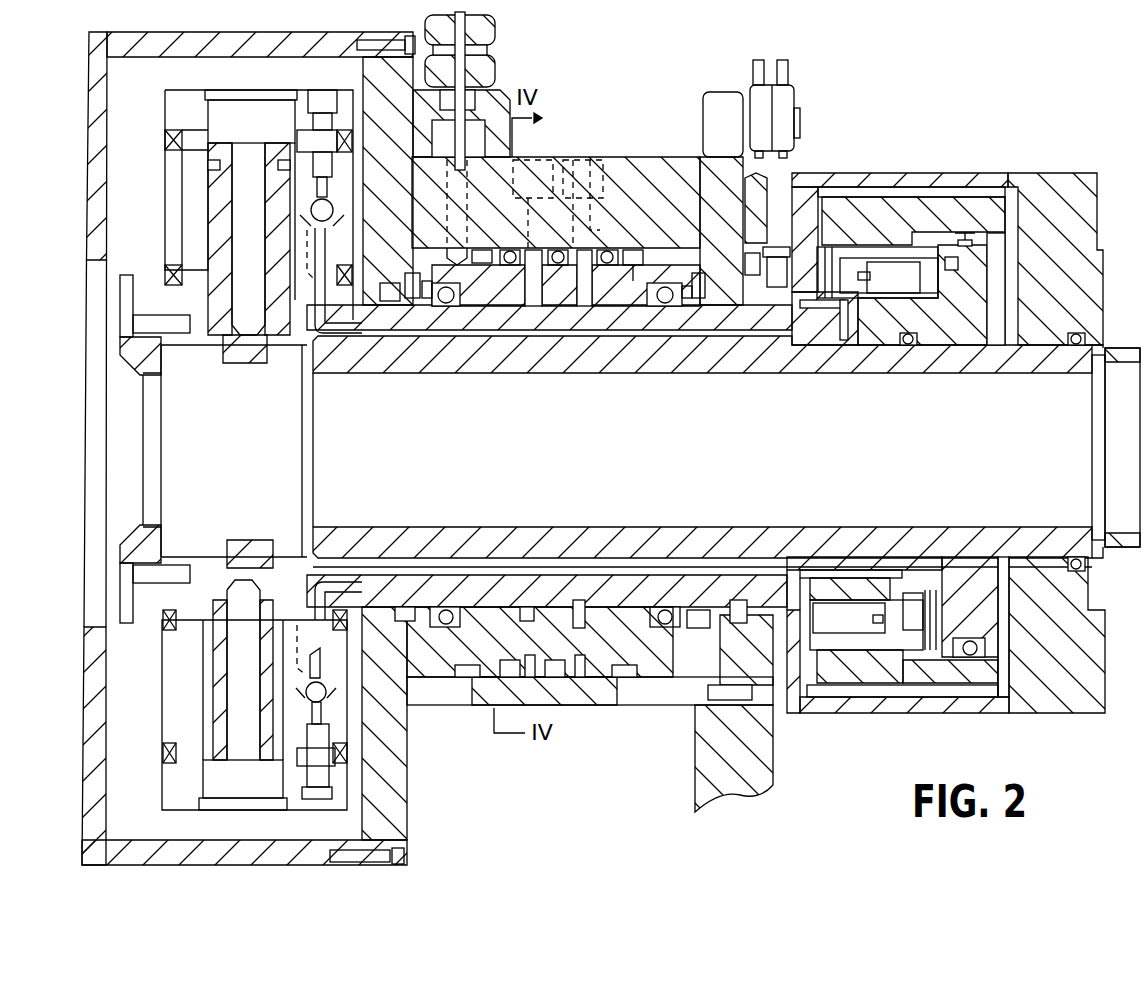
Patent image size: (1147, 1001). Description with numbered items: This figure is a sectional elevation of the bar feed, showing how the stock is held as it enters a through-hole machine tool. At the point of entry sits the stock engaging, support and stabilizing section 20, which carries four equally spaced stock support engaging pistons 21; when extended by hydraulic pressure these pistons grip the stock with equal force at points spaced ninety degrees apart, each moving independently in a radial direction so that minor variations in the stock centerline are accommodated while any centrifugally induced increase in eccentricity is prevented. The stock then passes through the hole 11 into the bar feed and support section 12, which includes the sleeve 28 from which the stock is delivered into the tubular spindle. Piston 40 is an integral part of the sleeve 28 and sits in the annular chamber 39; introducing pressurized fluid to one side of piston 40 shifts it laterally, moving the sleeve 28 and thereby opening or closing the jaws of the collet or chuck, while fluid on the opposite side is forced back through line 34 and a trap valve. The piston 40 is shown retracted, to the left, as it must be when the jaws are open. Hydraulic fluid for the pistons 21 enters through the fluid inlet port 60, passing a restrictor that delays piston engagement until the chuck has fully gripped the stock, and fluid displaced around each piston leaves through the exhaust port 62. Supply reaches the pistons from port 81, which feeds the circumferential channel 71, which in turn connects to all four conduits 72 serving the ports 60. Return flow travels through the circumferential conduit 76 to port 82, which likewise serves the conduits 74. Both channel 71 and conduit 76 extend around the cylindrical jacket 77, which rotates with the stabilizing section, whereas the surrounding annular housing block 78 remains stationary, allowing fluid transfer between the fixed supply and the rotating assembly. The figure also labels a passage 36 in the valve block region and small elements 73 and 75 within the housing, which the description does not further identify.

The hole 11 is at (99, 433).
The bar feed and support section 12 is at (935, 142).
The stock engaging, support and stabilizing section 20 is at (233, 84).
The stock support engaging piston 21 is at (220, 228).
The sleeve 28 is at (1106, 348).
The line 34 is at (588, 225).
The valve block 36 is at (528, 222).
The annular chamber 39 is at (1008, 250).
The piston 40 is at (978, 560).
The fluid inlet port 60 is at (208, 128).
The exhaust port 62 is at (297, 290).
The circumferential channel 71 is at (560, 302).
The conduit 72 is at (500, 327).
The pin 73 is at (533, 318).
The conduit 74 is at (522, 572).
The pin 75 is at (570, 582).
The conduit 76 is at (596, 302).
The cylindrical jacket 77 is at (418, 338).
The annular housing block 78 is at (222, 40).
The port 81 is at (530, 160).
The port 82 is at (585, 160).